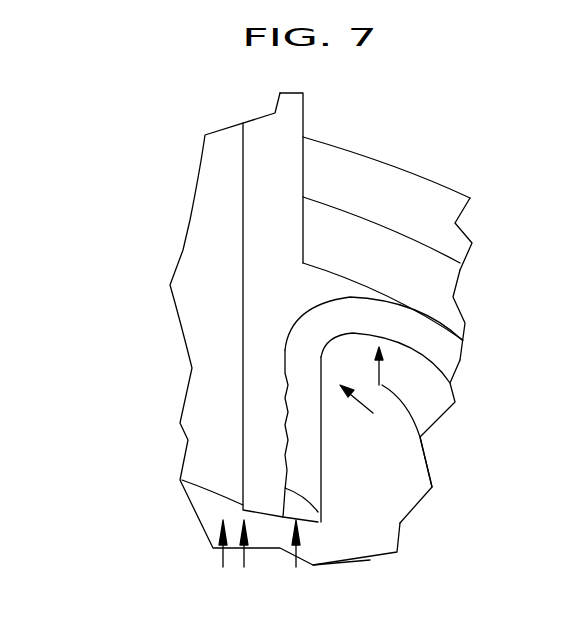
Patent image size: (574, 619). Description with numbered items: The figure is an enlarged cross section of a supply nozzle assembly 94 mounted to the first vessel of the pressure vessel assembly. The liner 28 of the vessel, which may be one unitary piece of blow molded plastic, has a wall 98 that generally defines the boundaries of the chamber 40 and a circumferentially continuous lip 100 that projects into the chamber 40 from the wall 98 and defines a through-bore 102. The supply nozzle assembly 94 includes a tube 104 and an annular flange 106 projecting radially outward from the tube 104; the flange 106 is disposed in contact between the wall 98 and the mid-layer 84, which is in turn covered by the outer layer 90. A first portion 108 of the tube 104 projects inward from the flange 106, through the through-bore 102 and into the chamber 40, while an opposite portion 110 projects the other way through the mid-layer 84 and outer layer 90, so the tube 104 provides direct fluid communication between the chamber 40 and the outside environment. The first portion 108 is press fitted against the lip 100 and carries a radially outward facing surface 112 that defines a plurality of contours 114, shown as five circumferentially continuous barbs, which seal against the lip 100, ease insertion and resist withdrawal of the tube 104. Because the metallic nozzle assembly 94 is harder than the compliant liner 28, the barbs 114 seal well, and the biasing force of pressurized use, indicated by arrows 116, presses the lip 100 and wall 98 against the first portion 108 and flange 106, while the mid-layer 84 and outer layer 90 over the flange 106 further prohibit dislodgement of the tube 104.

The supply nozzle assembly 94 is at (143, 173).
The tube 104 is at (308, 112).
The opposite portion 110 is at (267, 165).
The flange 106 is at (332, 287).
The outer layer 90 is at (465, 232).
The mid-layer 84 is at (457, 300).
The wall 98 is at (442, 352).
The liner 28 is at (460, 367).
The arrows 116 is at (333, 467).
The lip 100 is at (301, 468).
The contours 114 is at (322, 525).
The chamber 40 is at (372, 548).
The first portion 108 is at (263, 475).
The through-bore 102 is at (283, 375).
The surface 112 is at (287, 358).